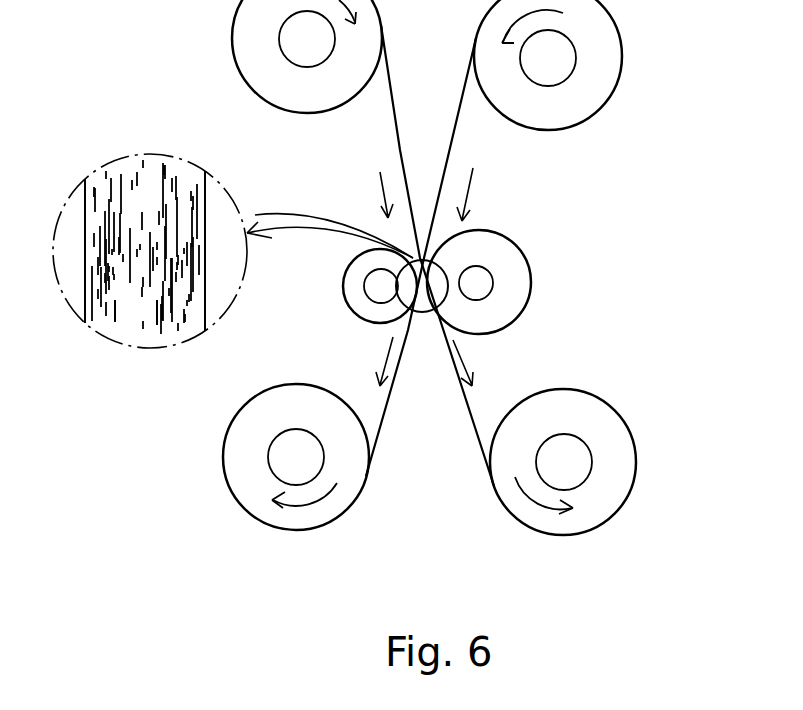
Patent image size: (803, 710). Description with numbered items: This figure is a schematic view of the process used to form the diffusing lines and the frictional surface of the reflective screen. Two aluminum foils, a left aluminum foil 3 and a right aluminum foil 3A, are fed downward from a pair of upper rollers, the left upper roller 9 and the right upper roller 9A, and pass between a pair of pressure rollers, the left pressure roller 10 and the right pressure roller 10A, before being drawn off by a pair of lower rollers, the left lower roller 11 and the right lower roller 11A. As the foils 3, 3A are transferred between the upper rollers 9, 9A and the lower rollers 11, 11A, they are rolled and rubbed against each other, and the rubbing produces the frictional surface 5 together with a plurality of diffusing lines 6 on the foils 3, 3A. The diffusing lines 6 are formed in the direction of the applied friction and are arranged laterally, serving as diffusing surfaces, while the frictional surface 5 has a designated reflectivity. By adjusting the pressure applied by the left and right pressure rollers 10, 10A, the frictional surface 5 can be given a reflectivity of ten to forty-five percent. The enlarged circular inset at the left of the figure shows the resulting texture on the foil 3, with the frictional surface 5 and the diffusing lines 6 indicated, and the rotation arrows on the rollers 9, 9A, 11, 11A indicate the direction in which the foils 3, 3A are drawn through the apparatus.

The aluminum foil 3 is at (392, 115).
The aluminum foil 3A is at (455, 133).
The frictional surface 5 is at (153, 327).
The diffusing lines 6 is at (115, 308).
The upper roller 9 is at (282, 55).
The upper roller 9A is at (567, 68).
The pressure roller 10 is at (364, 312).
The pressure roller 10A is at (522, 290).
The lower roller 11 is at (248, 492).
The lower roller 11A is at (605, 505).